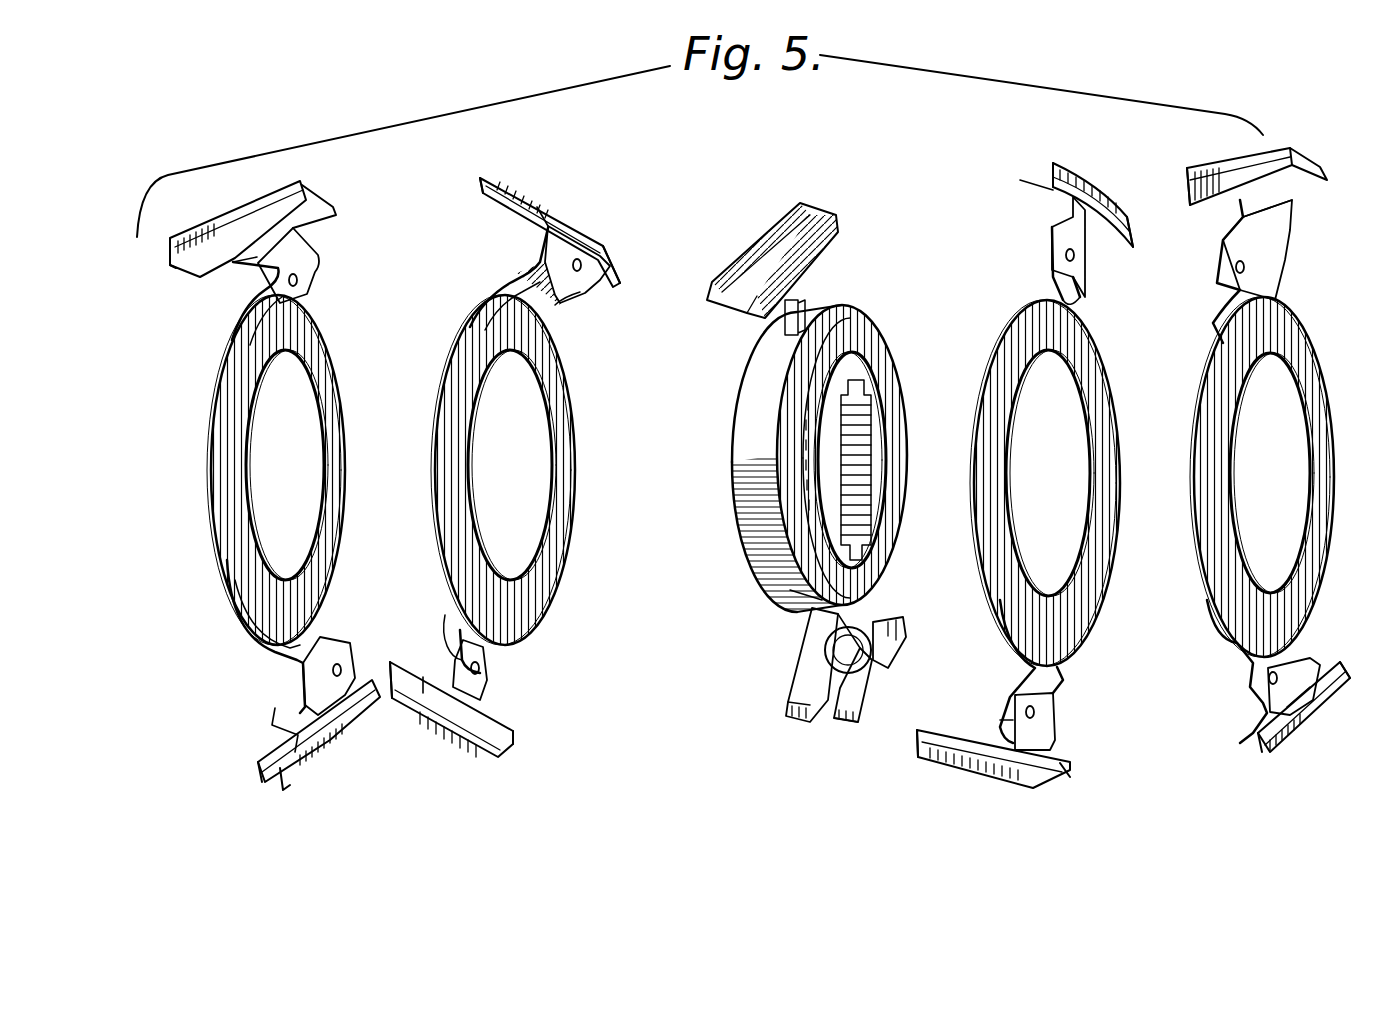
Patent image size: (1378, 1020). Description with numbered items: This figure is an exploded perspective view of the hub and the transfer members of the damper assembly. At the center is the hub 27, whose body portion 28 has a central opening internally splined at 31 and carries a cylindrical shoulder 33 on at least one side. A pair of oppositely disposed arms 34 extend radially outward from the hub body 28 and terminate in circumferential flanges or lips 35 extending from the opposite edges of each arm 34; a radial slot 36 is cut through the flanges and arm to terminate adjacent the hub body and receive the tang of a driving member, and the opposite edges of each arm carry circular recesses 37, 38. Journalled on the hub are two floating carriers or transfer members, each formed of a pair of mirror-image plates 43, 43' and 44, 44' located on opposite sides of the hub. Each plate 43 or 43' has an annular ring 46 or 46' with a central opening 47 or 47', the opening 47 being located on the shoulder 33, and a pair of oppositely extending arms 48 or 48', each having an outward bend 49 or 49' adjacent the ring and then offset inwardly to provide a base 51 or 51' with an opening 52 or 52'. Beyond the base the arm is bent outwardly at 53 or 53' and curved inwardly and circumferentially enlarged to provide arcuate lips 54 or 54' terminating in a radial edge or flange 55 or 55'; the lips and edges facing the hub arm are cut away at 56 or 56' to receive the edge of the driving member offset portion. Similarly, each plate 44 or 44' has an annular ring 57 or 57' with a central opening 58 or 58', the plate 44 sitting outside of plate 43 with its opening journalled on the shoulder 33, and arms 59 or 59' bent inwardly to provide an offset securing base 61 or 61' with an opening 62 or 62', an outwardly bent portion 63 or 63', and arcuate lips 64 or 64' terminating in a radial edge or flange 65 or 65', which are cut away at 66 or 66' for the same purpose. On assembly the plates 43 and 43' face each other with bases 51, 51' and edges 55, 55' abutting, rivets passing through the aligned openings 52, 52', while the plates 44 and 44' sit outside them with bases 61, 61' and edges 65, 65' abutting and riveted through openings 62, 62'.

The hub 27 is at (733, 553).
The body portion 28 is at (793, 477).
The internal splines 31 is at (877, 457).
The cylindrical shoulder 33 is at (817, 378).
The arm 34 is at (803, 293).
The circumferential flange or lip 35 is at (830, 213).
The radial slot 36 is at (753, 243).
The circular recess 37 is at (817, 303).
The circular recess 38 is at (873, 647).
The plate 43 is at (1027, 483).
The plate 44 is at (1239, 477).
The annular body or ring 46 is at (1067, 483).
The central opening 47 is at (1014, 473).
The arm 48 is at (1044, 483).
The outward bend 49 is at (1072, 485).
The base 51 is at (1042, 473).
The opening 52 is at (1042, 483).
The outward bend 53 is at (999, 450).
The arcuate lip 54 is at (1031, 478).
The radial edge or flange 55 is at (1025, 475).
The cut-away 56 is at (992, 481).
The annular ring 57 is at (1239, 477).
The central opening 58 is at (1229, 473).
The arm 59 is at (1256, 471).
The offset securing base 61 is at (1282, 457).
The opening 62 is at (1219, 494).
The outwardly bent portion 63 is at (1295, 450).
The arcuate lip 64 is at (1267, 444).
The radial edge or flange 65 is at (1262, 445).
The cut-away 66 is at (1252, 445).
The plate 43' is at (545, 470).
The plate 44' is at (304, 470).
The annular body or ring 46' is at (536, 470).
The central opening 47' is at (471, 465).
The arm 48' is at (507, 455).
The outward bend 49' is at (469, 450).
The base 51' is at (547, 464).
The opening 52' is at (527, 449).
The outward bend 53' is at (488, 427).
The arcuate lip 54' is at (556, 473).
The radial edge or flange 55' is at (505, 468).
The cut-away 56' is at (479, 462).
The annular ring 57' is at (236, 470).
The central opening 58' is at (326, 465).
The arm 59' is at (299, 472).
The offset securing base 61' is at (319, 466).
The opening 62' is at (302, 500).
The outwardly bent portion 63' is at (243, 508).
The arcuate lip 64' is at (249, 488).
The radial edge or flange 65' is at (275, 496).
The cut-away 66' is at (292, 494).